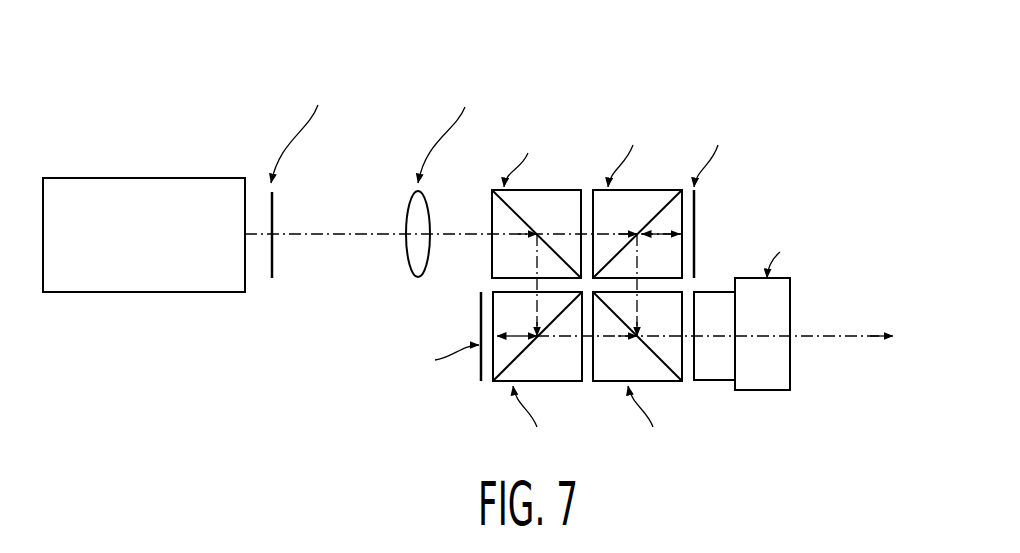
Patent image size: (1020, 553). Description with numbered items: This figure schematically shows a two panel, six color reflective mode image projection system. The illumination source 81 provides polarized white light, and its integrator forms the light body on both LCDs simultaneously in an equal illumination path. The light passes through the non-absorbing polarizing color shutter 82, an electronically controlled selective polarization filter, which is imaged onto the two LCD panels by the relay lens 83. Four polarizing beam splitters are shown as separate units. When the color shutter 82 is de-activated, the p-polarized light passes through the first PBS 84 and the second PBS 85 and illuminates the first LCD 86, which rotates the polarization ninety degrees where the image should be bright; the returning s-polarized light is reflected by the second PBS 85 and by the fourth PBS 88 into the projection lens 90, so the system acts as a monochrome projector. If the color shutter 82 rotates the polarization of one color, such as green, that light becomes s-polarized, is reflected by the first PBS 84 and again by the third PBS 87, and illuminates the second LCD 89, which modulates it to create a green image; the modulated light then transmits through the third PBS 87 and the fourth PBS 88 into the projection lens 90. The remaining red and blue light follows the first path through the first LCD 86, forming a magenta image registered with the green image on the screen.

The illumination source 81 is at (140, 293).
The non-absorbing polarizing color shutter 82 is at (271, 280).
The relay lens 83 is at (409, 262).
The first polarizing beam splitter 84 is at (492, 252).
The second polarizing beam splitter 85 is at (657, 188).
The first LCD 86 is at (697, 218).
The third polarizing beam splitter 87 is at (557, 382).
The fourth polarizing beam splitter 88 is at (658, 382).
The second LCD 89 is at (480, 377).
The projection lens 90 is at (760, 390).